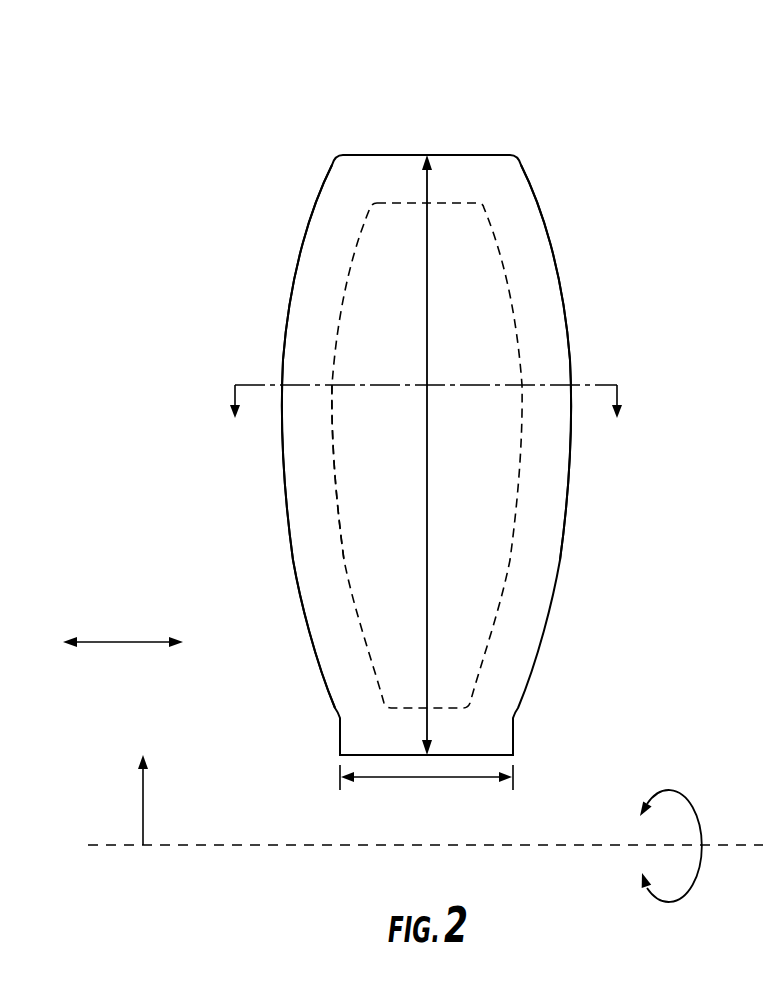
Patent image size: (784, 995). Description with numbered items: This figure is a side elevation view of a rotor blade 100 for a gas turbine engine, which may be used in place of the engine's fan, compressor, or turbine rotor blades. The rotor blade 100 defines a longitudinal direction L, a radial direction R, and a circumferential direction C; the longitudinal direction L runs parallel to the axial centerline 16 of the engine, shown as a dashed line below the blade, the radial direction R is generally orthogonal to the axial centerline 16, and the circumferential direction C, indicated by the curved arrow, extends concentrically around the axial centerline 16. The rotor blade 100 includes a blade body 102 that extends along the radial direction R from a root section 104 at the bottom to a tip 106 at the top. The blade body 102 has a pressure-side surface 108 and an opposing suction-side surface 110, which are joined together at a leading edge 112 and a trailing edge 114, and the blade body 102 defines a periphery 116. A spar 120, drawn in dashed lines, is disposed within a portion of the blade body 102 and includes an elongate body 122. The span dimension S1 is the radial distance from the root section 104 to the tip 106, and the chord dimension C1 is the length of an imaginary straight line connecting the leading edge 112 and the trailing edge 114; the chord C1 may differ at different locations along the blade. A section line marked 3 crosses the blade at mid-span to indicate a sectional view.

The rotor blade 100 is at (272, 98).
The blade body 102 is at (307, 222).
The root section 104 is at (338, 755).
The tip 106 is at (377, 155).
The pressure-side surface 108 is at (468, 450).
The suction-side surface 110 is at (567, 240).
The leading edge 112 is at (282, 480).
The trailing edge 114 is at (568, 480).
The periphery 116 is at (307, 625).
The spar 120 is at (337, 357).
The elongate body 122 is at (340, 535).
The axial centerline 16 is at (222, 848).
The section line 3- 3 is at (426, 422).
The span dimension S1 is at (427, 405).
The chord dimension C1 is at (393, 778).
The longitudinal direction L is at (125, 640).
The radial direction R is at (143, 800).
The circumferential direction C is at (697, 803).